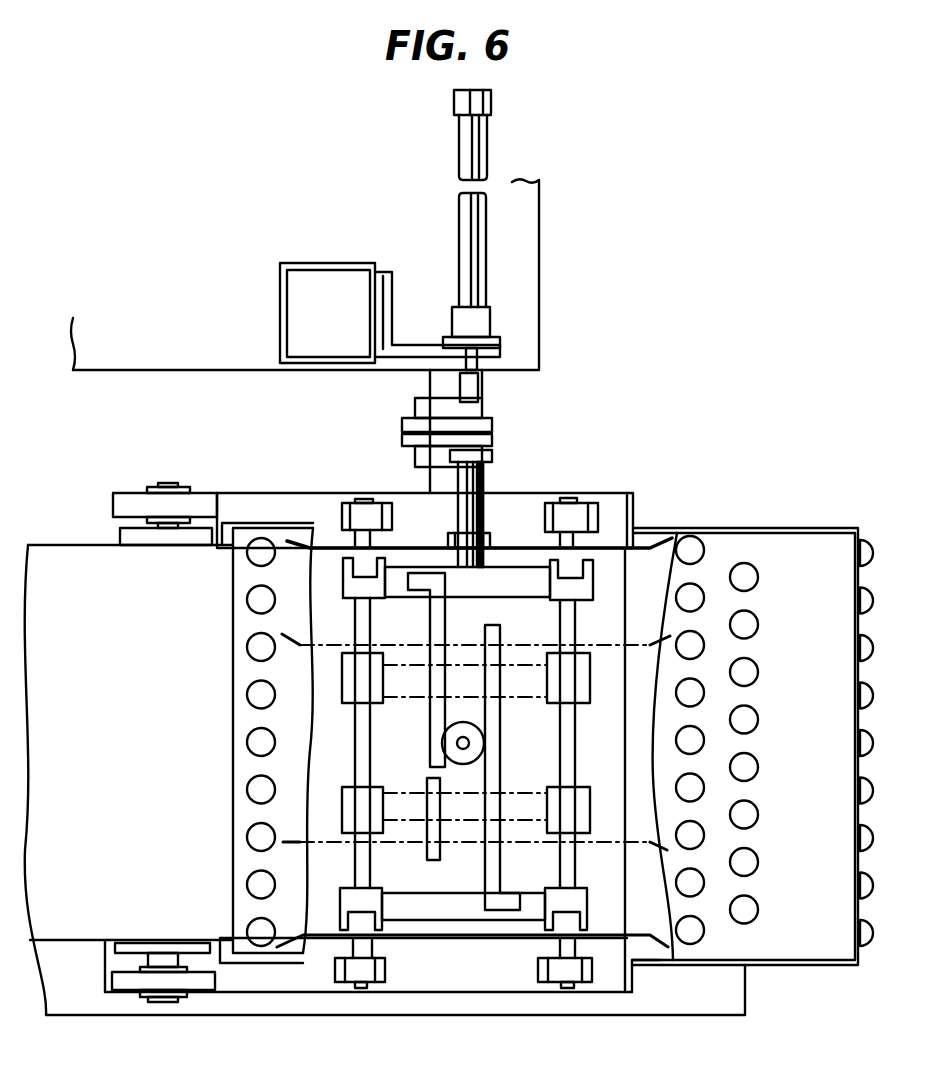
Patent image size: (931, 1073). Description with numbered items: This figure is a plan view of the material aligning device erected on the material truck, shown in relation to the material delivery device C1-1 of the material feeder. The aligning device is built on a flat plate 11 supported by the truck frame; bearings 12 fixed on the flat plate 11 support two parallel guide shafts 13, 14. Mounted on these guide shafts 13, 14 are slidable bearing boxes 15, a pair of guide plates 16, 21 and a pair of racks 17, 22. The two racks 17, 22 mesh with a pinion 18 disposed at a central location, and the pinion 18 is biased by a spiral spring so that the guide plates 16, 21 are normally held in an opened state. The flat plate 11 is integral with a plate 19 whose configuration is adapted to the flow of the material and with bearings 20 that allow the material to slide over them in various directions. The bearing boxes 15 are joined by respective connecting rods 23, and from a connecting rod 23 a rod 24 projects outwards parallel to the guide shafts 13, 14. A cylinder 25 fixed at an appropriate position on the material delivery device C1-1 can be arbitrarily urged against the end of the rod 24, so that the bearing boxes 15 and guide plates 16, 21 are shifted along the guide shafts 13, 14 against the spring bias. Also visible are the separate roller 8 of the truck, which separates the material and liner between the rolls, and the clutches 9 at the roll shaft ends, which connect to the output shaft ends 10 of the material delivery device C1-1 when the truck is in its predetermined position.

The separate roller 8 is at (122, 540).
The clutches 9 is at (492, 441).
The output shaft ends 10 is at (492, 420).
The flat plate 11 is at (483, 1015).
The bearings 12 is at (355, 503).
The guide shaft 13 is at (358, 988).
The guide shaft 14 is at (562, 988).
The slidable bearing boxes 15 is at (345, 570).
The guide plate 16 is at (460, 940).
The rack 17 is at (500, 762).
The pinion 18 is at (478, 722).
The plate 19 is at (682, 965).
The bearings 20 is at (860, 893).
The guide plate 21 is at (527, 550).
The rack 22 is at (428, 708).
The connecting rod 23 is at (512, 597).
The rod 24 is at (487, 476).
The cylinder 25 is at (490, 278).
The material delivery device C1-1 is at (539, 323).